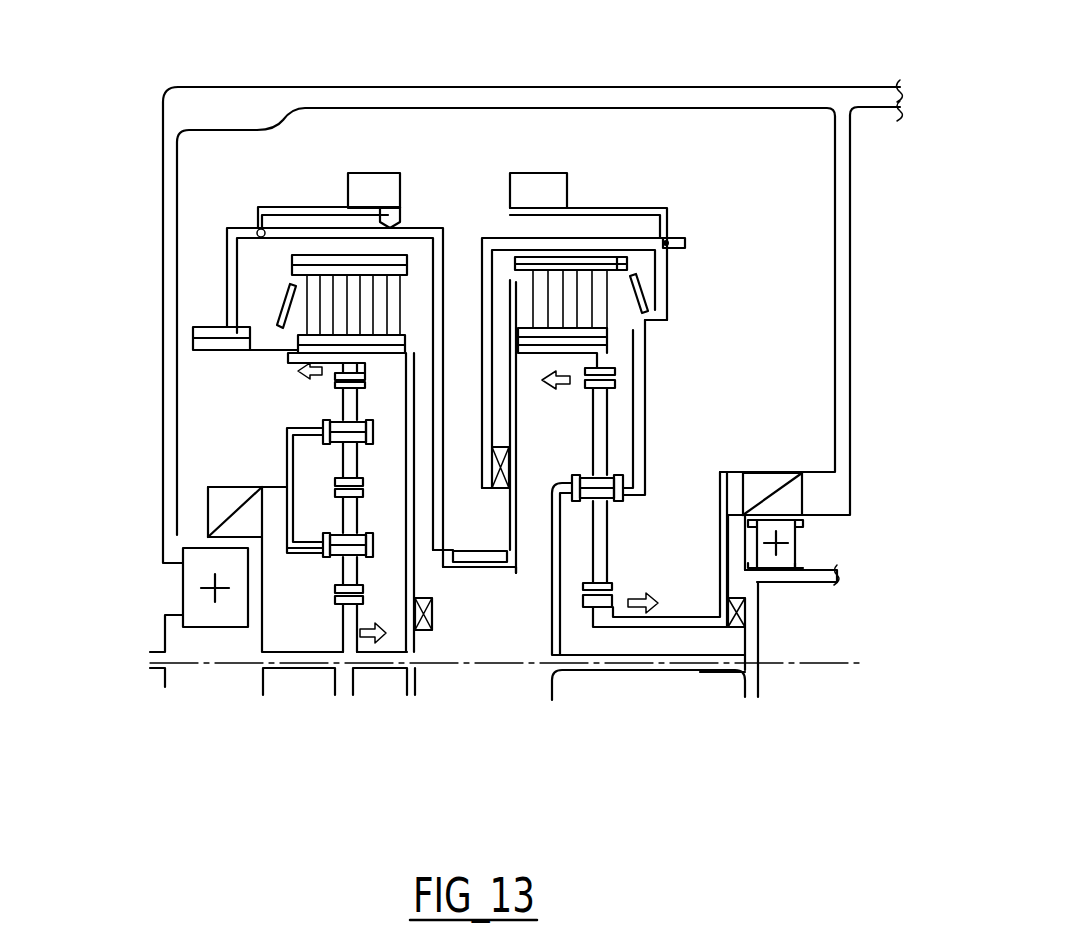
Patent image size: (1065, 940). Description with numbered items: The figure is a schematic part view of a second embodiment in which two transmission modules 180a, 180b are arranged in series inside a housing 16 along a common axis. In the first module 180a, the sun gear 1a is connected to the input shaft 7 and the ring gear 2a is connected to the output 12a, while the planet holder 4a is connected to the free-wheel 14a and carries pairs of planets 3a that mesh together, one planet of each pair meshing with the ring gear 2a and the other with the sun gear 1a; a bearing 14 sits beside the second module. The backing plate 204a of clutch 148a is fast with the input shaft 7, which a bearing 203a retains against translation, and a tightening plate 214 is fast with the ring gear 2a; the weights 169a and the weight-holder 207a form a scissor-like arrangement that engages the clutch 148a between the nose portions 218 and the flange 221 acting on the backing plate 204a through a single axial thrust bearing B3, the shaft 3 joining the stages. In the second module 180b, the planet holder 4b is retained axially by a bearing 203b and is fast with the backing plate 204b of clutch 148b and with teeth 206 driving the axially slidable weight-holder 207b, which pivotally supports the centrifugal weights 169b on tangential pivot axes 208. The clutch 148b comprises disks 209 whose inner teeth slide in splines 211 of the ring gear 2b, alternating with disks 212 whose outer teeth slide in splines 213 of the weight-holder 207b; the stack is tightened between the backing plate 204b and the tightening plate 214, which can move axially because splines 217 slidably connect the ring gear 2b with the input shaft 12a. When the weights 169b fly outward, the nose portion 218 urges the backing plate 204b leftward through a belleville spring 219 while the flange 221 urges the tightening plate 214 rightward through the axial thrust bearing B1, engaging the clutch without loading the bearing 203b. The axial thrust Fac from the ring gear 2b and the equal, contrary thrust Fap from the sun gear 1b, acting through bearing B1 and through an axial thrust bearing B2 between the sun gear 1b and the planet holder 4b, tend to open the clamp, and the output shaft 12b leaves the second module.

The transmission housing 16 is at (790, 96).
The centrifugal weights 169a is at (378, 168).
The centrifugal weights 169b is at (537, 168).
The module 180a is at (290, 190).
The module 180b is at (637, 195).
The clutch 148a is at (285, 258).
The clutch 148b is at (508, 262).
The splines 213 is at (547, 161).
The tightening plate 214 is at (302, 300).
The weight-holder 207a is at (419, 226).
The weight-holder 207b is at (688, 243).
The backing plate 204a is at (408, 300).
The backing plate 204b is at (603, 315).
The teeth 206 is at (641, 253).
The tangential pivot axes 208 is at (690, 238).
The disks 212 is at (514, 298).
The belleville spring 219 is at (270, 312).
The flange 221 is at (220, 350).
The nose portion 218 is at (275, 333).
The disks 209 is at (557, 340).
The splines 211 is at (547, 355).
The splines 217 is at (477, 551).
The input shaft 12a is at (478, 573).
The output shaft 12b is at (802, 583).
The axial thrust bearing B1 is at (498, 489).
The axial thrust bearing B2 is at (745, 612).
The axial thrust bearing B3 is at (428, 633).
The ring gear 2a is at (340, 368).
The ring gear 2b is at (617, 371).
The planets 3a is at (352, 460).
The intermediate shaft 3 is at (603, 453).
The planet holder 4a is at (288, 467).
The planet holder 4b is at (548, 632).
The bearing 14 is at (762, 482).
The free-wheel 14a is at (217, 510).
The bearing 203a is at (188, 574).
The bearing 203b is at (788, 533).
The sun gear 1a is at (343, 636).
The sun gear 1b is at (606, 612).
The input shaft 7 is at (316, 667).
The axial thrust Fac is at (565, 393).
The axial thrust Fap is at (644, 586).